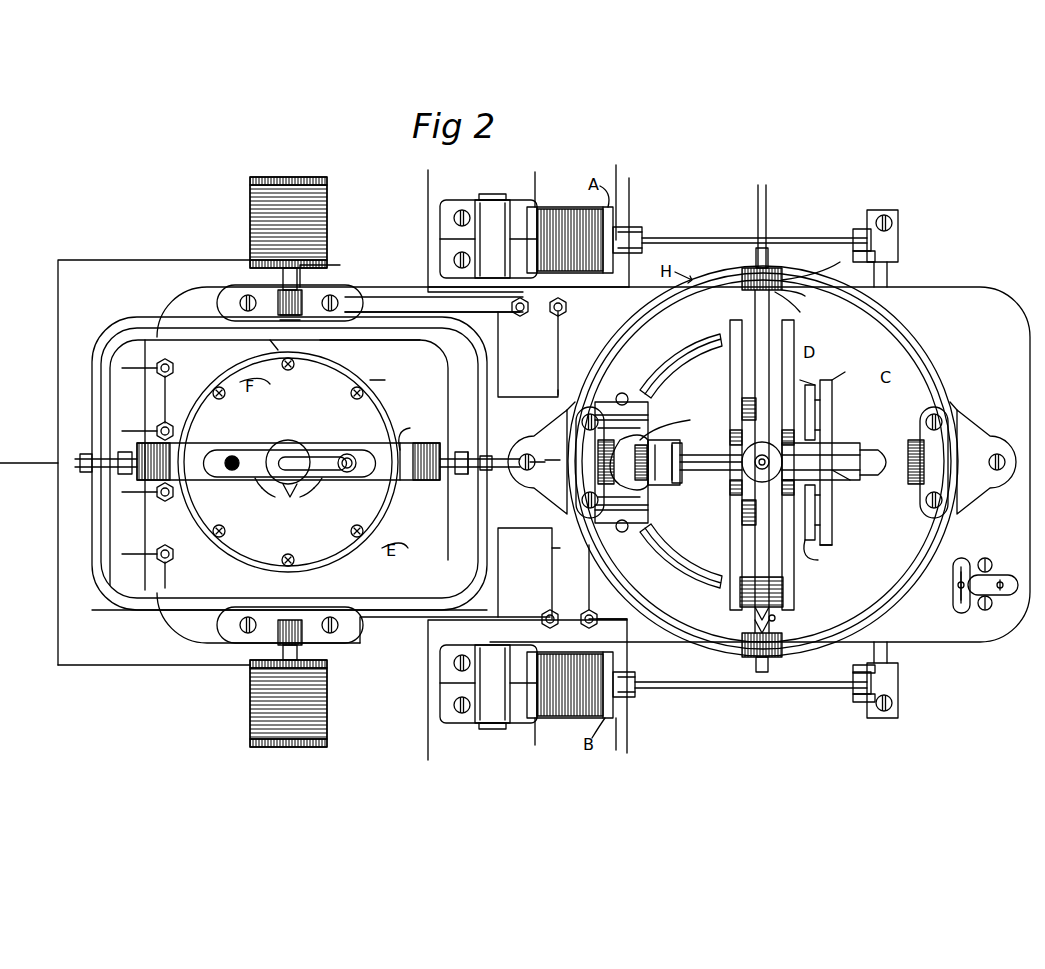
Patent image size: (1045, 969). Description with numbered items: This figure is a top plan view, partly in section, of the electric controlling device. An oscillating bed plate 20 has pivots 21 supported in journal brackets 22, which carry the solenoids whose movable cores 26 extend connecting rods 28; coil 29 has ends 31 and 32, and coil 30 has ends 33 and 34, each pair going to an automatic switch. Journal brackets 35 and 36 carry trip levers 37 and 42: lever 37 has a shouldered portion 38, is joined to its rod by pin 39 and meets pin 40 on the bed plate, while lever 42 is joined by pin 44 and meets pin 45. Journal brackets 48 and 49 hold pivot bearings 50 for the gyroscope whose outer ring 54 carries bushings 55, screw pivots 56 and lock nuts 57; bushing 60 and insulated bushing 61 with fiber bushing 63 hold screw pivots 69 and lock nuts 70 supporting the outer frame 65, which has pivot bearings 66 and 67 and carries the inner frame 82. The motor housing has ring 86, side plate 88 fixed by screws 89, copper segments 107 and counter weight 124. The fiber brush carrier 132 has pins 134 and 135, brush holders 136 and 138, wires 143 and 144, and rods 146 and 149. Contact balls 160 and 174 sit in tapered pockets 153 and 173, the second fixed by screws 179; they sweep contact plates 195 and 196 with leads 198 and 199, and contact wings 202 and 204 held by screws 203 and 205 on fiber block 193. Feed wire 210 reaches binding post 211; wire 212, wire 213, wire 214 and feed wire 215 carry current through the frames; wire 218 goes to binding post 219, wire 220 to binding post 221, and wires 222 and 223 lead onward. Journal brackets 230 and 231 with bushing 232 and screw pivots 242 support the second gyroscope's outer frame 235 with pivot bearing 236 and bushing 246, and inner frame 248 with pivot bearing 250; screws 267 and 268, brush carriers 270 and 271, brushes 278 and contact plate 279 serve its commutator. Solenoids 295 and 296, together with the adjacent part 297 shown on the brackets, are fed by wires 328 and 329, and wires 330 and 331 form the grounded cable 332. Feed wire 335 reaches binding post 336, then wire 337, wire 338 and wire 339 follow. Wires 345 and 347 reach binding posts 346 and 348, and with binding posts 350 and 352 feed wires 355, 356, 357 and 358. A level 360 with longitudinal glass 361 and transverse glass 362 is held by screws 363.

The oscillating bed plate 20 is at (593, 465).
The pivots 21 is at (490, 729).
The journal brackets 22 is at (462, 723).
The movable core 26 is at (636, 230).
The connecting rod 28 is at (735, 238).
The coil 29 is at (570, 207).
The coil 30 is at (566, 718).
The end of coil 31 is at (535, 172).
The end of coil 32 is at (616, 172).
The end of coil 33 is at (535, 745).
The end of coil 34 is at (616, 750).
The journal bracket 35 is at (898, 707).
The journal bracket 36 is at (898, 220).
The trip lever 37 is at (898, 672).
The shouldered portion 38 is at (853, 676).
The pin 39 is at (868, 698).
The pin 40 is at (866, 668).
The trip lever 42 is at (898, 260).
The pin 44 is at (853, 236).
The pin 45 is at (874, 268).
The journal bracket 48 is at (527, 454).
The journal bracket 49 is at (995, 452).
The pivot bearings 50 is at (608, 470).
The outer ring 54 is at (763, 461).
The bushings 55 is at (570, 515).
The screw pivots 56 is at (990, 492).
The lock nuts 57 is at (558, 470).
The bushing 60 is at (758, 628).
The bushing 61 is at (798, 297).
The fiber bushing 63 is at (811, 267).
The outer frame 65 is at (783, 591).
The pivot bearing 66 is at (778, 618).
The pivot bearing 67 is at (799, 309).
The screw pivots 69 is at (756, 255).
The lock nuts 70 is at (782, 272).
The inner frame 82 is at (711, 473).
The ring 86 is at (240, 567).
The side plate 88 is at (259, 527).
The screws 89 is at (294, 368).
The copper segments 107 is at (296, 440).
The counter weight 124 is at (742, 515).
The fiber brush carrier 132 is at (832, 398).
The pin 134 is at (830, 552).
The pin 135 is at (804, 383).
The brush holder 136 is at (815, 522).
The brush holder 138 is at (815, 408).
The wire 143 is at (832, 512).
The wire 144 is at (832, 430).
The rod 146 is at (833, 545).
The rod 149 is at (862, 361).
The tapered pocket 153 is at (868, 480).
The contact ball 160 is at (888, 462).
The tapered pocket 173 is at (742, 408).
The contact ball 174 is at (648, 462).
The screws 179 is at (682, 461).
The fiber block 193 is at (626, 458).
The contact plate 195 is at (664, 482).
The contact plate 196 is at (695, 416).
The lead 198 is at (619, 508).
The lead 199 is at (619, 427).
The contact wing 202 is at (680, 565).
The screw 203 is at (625, 532).
The contact wing 204 is at (690, 362).
The screw 205 is at (630, 385).
The feed wire 210 is at (629, 188).
The binding post 211 is at (568, 308).
The wire 212 is at (598, 342).
The wire 213 is at (742, 392).
The wire 214 is at (801, 462).
The feed wire 215 is at (772, 196).
The wire 218 is at (589, 600).
The binding post 219 is at (600, 618).
The wire 220 is at (552, 548).
The binding post 221 is at (548, 610).
The wire 222 is at (627, 727).
The wire 223 is at (428, 730).
The journal bracket 230 is at (335, 290).
The journal bracket 231 is at (240, 630).
The bushing 232 is at (236, 304).
The outer frame 235 is at (418, 598).
The pivot bearing 236 is at (278, 348).
The screw pivots 242 is at (332, 662).
The bushing 246 is at (432, 470).
The inner frame 248 is at (297, 461).
The pivot bearing 250 is at (430, 450).
The screw 267 is at (290, 463).
The screw 268 is at (348, 454).
The brush carrier 270 is at (264, 490).
The brush carrier 271 is at (318, 490).
The brushes 278 is at (290, 498).
The contact plate 279 is at (313, 464).
The solenoid 295 is at (272, 177).
The solenoid 296 is at (258, 747).
The pin 297 is at (283, 280).
The wire 328 is at (498, 359).
The wire 329 is at (520, 528).
The wire 330 is at (147, 260).
The wire 331 is at (133, 665).
The cable 332 is at (10, 463).
The feed wire 335 is at (428, 224).
The binding post 336 is at (548, 305).
The wire 337 is at (380, 316).
The wire 338 is at (398, 340).
The wire 339 is at (402, 448).
The wire 345 is at (165, 360).
The binding post 346 is at (174, 368).
The wire 347 is at (375, 382).
The binding post 348 is at (182, 400).
The binding post 350 is at (165, 500).
The binding post 352 is at (160, 560).
The wire 355 is at (122, 368).
The wire 356 is at (122, 431).
The wire 357 is at (122, 492).
The wire 358 is at (122, 554).
The combined longitudinal and transverse level 360 is at (965, 558).
The longitudinal glass 361 is at (1003, 595).
The transverse glass 362 is at (960, 592).
The screws 363 is at (992, 564).